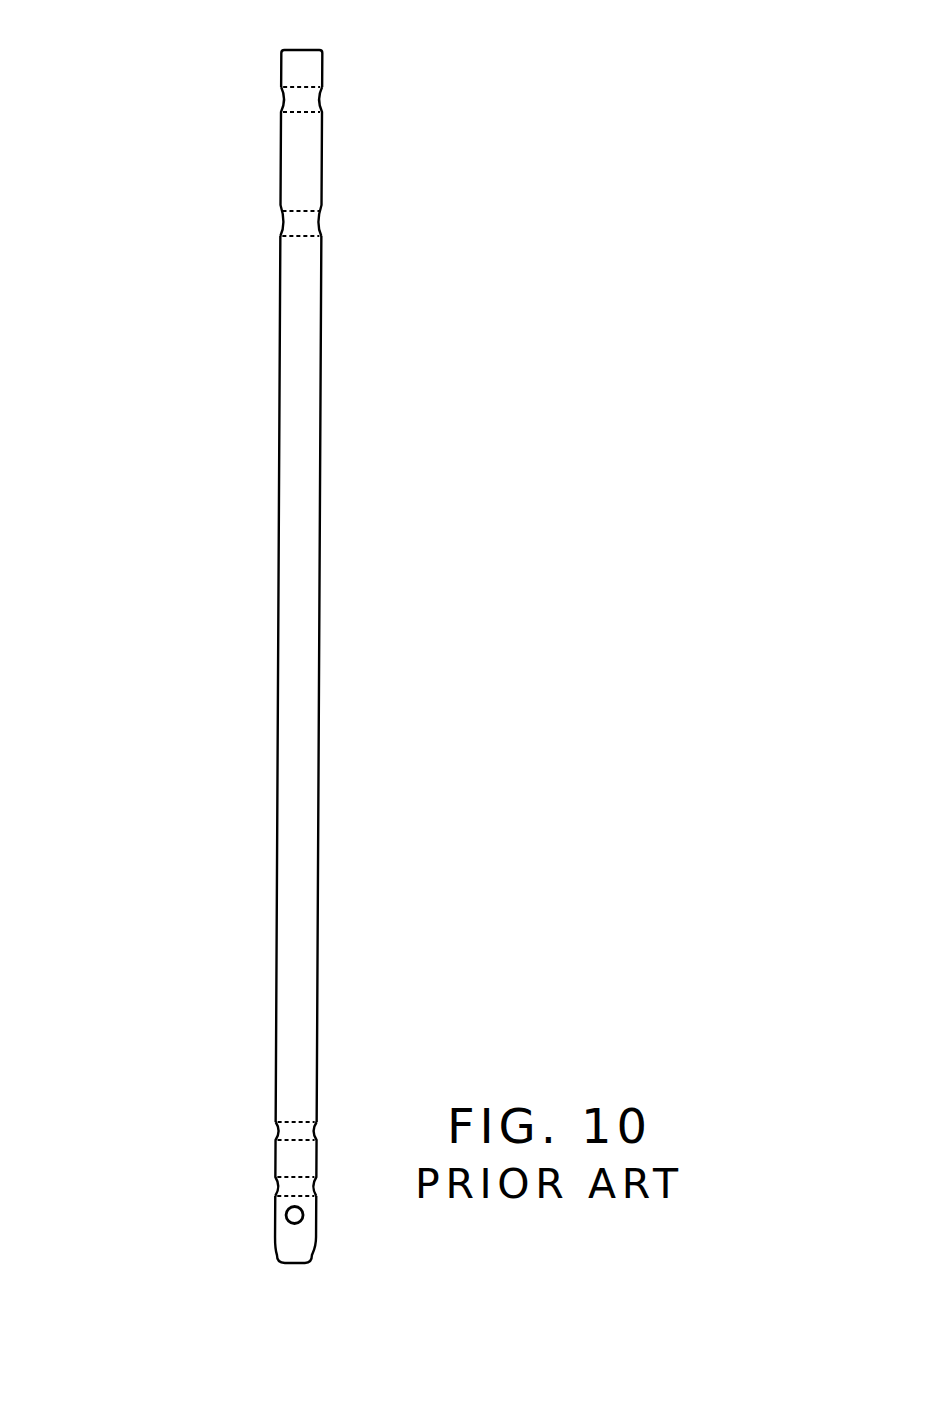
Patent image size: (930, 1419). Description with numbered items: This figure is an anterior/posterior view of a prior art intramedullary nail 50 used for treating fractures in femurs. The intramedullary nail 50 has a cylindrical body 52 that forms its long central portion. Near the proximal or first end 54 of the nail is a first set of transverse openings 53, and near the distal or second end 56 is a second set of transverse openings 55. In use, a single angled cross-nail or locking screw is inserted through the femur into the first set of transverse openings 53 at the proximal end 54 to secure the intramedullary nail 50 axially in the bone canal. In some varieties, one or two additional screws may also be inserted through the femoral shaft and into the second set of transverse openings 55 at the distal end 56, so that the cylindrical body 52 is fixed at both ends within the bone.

The intramedullary nail 50 is at (517, 675).
The cylindrical body 52 is at (319, 762).
The first set of transverse openings 53 is at (235, 213).
The proximal end 54 is at (303, 47).
The second set of transverse openings 55 is at (238, 1174).
The distal end 56 is at (294, 1265).